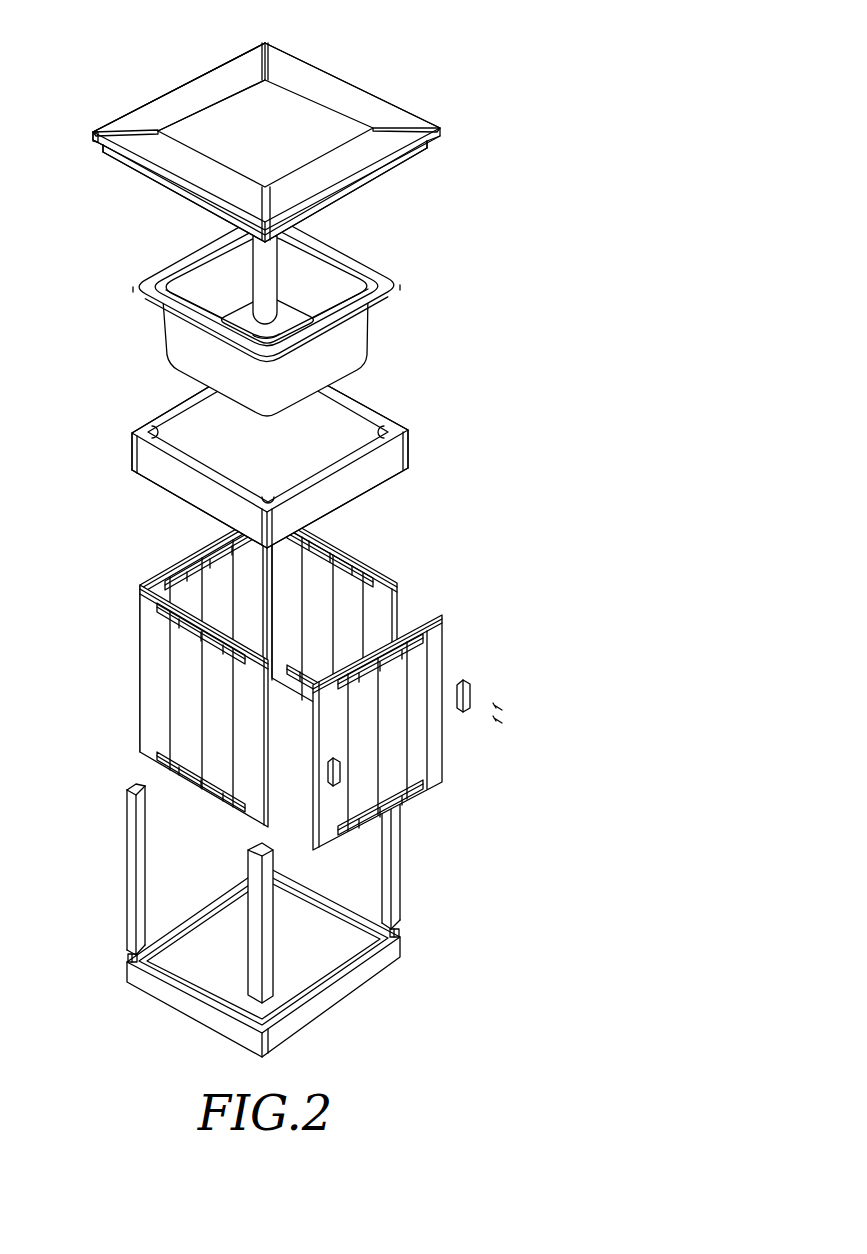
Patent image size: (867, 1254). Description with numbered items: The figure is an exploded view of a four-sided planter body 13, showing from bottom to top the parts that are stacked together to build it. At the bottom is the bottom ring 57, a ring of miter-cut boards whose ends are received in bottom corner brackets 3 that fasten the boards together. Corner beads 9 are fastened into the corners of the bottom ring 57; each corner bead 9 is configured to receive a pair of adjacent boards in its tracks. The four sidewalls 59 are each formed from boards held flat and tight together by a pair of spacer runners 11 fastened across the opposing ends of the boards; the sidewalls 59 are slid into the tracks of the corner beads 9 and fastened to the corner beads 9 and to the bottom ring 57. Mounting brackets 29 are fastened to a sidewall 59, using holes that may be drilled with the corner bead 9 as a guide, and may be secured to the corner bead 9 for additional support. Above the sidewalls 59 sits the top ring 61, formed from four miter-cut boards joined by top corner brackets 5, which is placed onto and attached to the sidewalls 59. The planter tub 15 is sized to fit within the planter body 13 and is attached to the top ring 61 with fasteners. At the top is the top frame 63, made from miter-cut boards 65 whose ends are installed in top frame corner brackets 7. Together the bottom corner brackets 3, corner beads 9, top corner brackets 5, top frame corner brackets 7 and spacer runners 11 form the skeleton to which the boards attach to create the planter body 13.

The bottom corner bracket 3 is at (129, 959).
The top corner bracket 5 is at (131, 432).
The top frame corner bracket 7 is at (262, 48).
The corner bead 9 is at (127, 838).
The spacer runner 11 is at (190, 570).
The planter body 13 is at (124, 603).
The planter tub 15 is at (416, 273).
The mounting bracket 29 is at (468, 682).
The bottom ring 57 is at (360, 1005).
The sidewall 59 is at (160, 697).
The top ring 61 is at (426, 485).
The top frame 63 is at (362, 60).
The board 65 is at (188, 95).